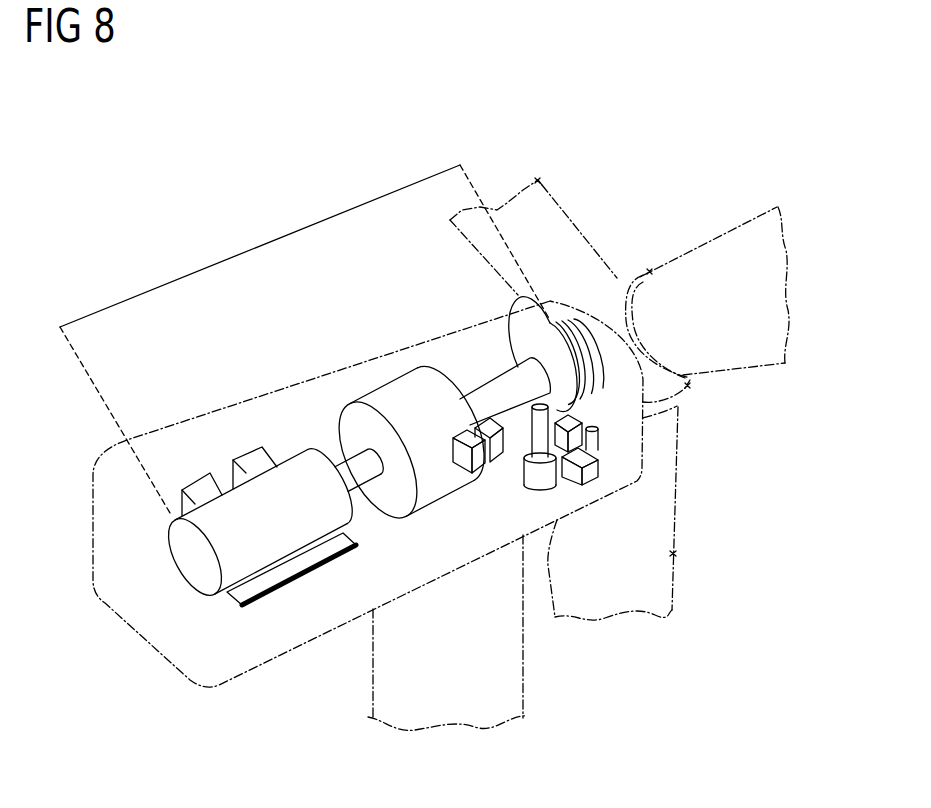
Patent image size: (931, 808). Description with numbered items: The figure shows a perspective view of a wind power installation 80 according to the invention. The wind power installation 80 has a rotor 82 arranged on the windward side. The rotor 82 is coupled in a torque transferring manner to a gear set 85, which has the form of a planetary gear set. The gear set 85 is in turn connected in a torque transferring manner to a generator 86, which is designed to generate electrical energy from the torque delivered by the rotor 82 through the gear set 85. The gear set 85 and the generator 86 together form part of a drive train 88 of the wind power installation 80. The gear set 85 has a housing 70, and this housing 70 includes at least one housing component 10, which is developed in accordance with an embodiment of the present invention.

The wind power installation 80 is at (150, 193).
The drive train 88 is at (305, 339).
The rotor 82 is at (260, 395).
The housing component 10 is at (394, 391).
The housing 70 is at (463, 413).
The gear set 85 is at (463, 413).
The generator 86 is at (194, 573).